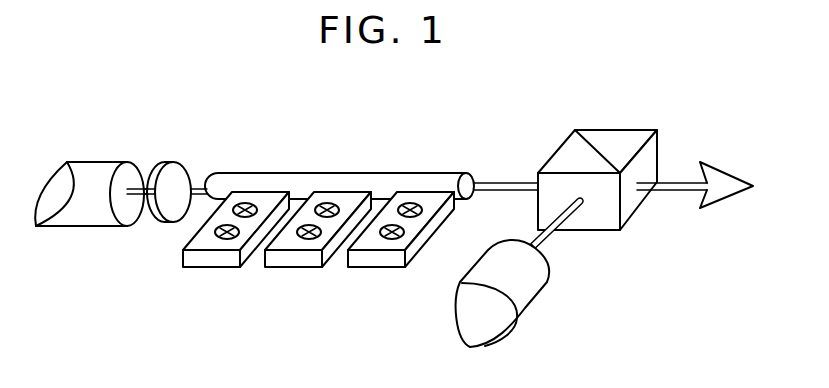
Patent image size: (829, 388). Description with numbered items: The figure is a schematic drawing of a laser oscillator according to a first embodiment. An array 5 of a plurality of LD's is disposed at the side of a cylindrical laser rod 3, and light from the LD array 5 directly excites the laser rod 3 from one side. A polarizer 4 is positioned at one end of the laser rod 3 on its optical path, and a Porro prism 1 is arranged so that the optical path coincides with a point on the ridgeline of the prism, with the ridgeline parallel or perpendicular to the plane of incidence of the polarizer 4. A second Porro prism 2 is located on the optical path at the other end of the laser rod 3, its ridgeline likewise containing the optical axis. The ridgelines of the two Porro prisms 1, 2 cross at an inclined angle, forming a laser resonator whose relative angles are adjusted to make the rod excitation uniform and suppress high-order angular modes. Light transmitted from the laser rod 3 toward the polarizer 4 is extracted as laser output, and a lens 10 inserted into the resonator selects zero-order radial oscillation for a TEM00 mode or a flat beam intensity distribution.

The Porro prism 1 is at (536, 287).
The second Porro prism 2 is at (98, 165).
The laser rod 3 is at (350, 175).
The polarizer 4 is at (613, 140).
The LD array 5 is at (292, 263).
The lens 10 is at (167, 165).